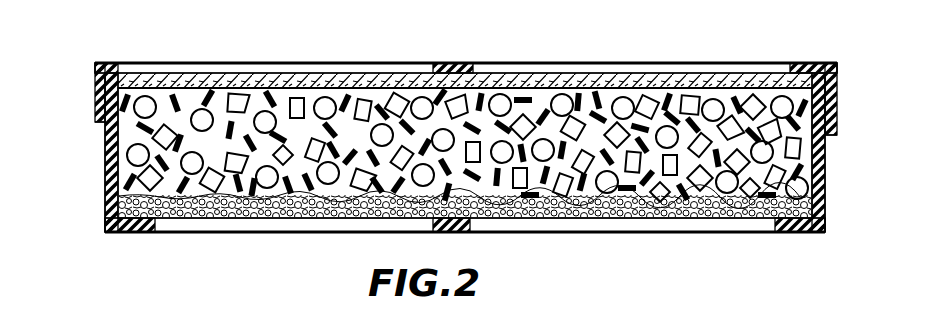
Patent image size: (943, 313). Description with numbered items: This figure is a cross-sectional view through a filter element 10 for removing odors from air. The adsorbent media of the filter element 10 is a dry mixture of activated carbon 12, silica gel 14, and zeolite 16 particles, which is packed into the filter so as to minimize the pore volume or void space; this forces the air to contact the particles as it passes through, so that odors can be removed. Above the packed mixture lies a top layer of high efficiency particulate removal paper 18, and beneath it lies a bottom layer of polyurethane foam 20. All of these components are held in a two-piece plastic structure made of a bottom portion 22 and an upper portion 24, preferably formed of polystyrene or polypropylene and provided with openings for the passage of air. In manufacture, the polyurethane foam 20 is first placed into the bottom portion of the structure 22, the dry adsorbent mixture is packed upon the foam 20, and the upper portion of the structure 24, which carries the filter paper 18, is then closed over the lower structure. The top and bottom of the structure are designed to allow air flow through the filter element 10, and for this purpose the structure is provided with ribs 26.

The filter element 10 is at (212, 255).
The activated carbon 12 is at (265, 96).
The silica gel 14 is at (463, 106).
The zeolite 16 is at (150, 105).
The high efficiency particulate removal paper 18 is at (635, 87).
The polyurethane foam 20 is at (812, 208).
The bottom portion of the structure 22 is at (684, 235).
The upper portion of the structure 24 is at (792, 63).
The ribs 26 is at (460, 63).